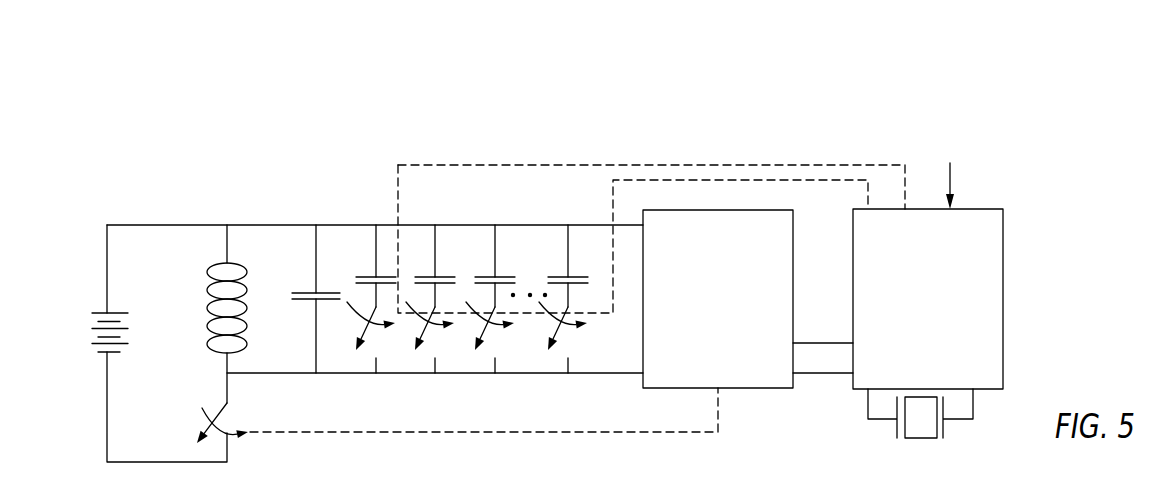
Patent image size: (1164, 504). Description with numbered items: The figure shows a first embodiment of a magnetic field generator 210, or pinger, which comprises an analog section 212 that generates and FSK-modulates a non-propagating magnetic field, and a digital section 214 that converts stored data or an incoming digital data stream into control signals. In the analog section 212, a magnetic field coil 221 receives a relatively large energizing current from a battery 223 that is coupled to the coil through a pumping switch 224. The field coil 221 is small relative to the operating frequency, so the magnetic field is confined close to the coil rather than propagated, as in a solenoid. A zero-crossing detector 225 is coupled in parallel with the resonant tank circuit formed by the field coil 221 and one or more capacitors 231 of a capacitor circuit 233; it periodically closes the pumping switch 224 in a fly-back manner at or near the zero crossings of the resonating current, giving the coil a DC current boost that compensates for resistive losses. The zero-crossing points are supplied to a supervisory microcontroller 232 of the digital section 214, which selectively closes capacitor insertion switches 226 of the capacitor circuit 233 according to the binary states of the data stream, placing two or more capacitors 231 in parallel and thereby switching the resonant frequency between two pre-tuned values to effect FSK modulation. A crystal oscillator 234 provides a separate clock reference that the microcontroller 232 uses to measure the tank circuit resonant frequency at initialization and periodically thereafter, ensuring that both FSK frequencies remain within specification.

The magnetic field generator 210 is at (794, 107).
The analog section 212 is at (828, 150).
The digital section 214 is at (1038, 140).
The magnetic field coil 221 is at (238, 275).
The battery 223 is at (85, 337).
The pumping switch 224 is at (227, 435).
The zero-crossing detector 225 is at (745, 377).
The capacitor insertion switches 226 is at (568, 343).
The capacitors 231 is at (300, 316).
The supervisory microcontroller 232 is at (1003, 318).
The capacitor circuit 233 is at (512, 358).
The crystal oscillator 234 is at (918, 442).